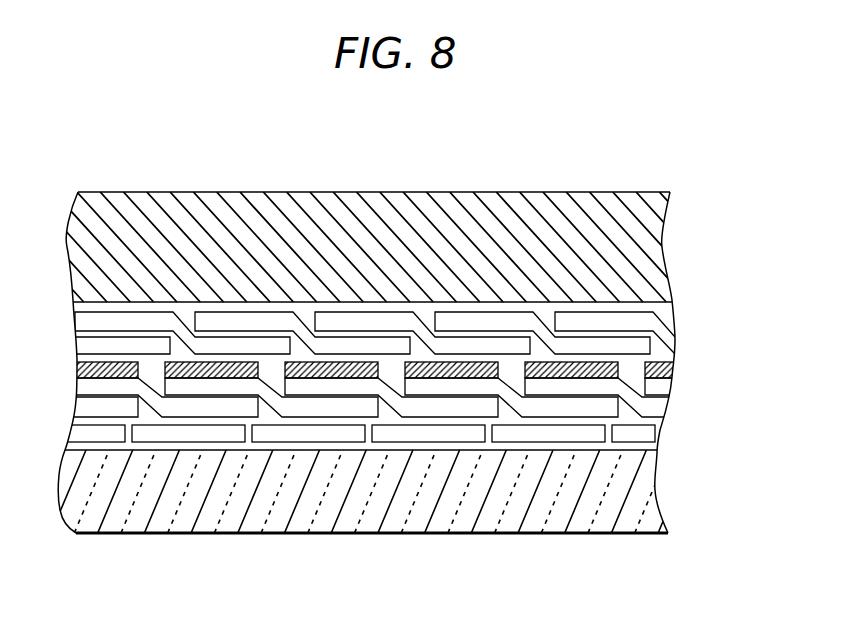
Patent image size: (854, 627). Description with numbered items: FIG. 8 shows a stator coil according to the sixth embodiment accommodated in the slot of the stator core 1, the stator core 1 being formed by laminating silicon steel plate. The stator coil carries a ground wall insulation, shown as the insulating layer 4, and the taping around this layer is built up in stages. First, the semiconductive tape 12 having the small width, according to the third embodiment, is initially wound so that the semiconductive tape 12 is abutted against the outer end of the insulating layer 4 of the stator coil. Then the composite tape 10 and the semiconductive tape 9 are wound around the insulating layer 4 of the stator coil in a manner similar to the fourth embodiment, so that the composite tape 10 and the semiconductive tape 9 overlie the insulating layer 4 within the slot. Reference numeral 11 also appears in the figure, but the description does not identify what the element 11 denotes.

The stator core 1 is at (415, 197).
The ground wall insulation 4 is at (563, 513).
The semiconductive tape 9 is at (693, 313).
The composite tape 10 is at (391, 479).
The bus electrodes 11 is at (327, 377).
The semiconductive tape having the small width 12 is at (648, 433).